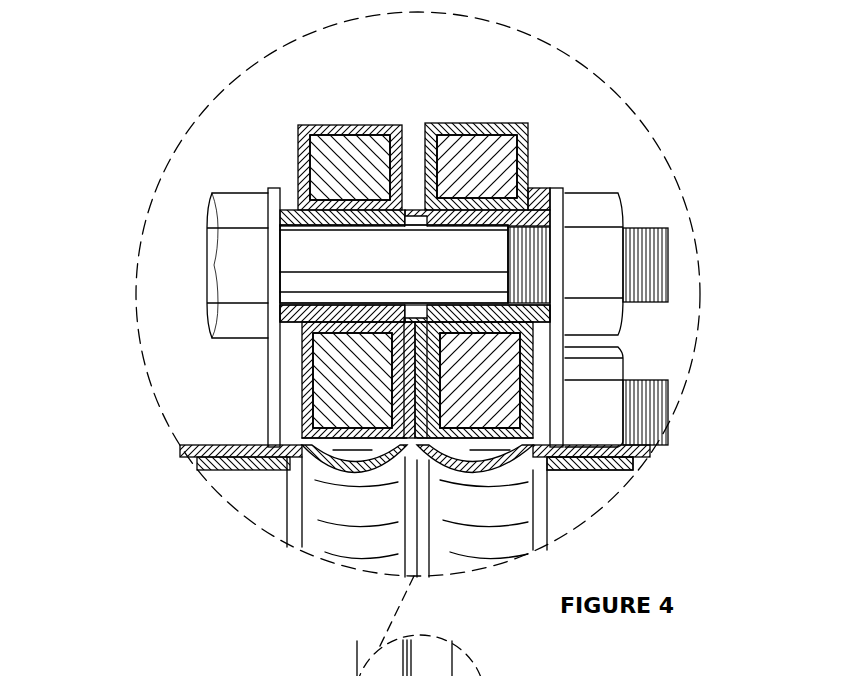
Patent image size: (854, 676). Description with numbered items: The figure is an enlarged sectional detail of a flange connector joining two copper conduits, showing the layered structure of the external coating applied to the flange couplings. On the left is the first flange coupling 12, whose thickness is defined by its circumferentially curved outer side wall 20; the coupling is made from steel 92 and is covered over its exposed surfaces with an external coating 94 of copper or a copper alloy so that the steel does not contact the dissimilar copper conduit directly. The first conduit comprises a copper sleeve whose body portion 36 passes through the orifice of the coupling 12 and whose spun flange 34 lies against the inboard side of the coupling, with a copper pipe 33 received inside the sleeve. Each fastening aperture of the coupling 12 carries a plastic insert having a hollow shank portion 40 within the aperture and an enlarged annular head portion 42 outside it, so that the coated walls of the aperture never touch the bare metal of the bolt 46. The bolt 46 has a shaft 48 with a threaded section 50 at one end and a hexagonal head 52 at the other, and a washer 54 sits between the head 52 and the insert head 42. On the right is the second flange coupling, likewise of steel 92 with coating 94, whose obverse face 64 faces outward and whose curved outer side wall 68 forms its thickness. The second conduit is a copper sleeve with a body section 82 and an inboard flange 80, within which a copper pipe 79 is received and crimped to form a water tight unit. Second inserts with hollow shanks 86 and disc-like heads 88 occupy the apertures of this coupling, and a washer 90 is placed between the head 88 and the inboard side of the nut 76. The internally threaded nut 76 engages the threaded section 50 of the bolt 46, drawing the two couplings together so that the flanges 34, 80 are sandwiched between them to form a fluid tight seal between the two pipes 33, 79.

The first flange coupling 12 is at (298, 150).
The outer side wall 20 is at (347, 127).
The pipe 33 is at (245, 470).
The flange 34 is at (410, 405).
The body portion 36 is at (183, 447).
The shank portion 40 is at (342, 307).
The head portion 42 is at (300, 327).
The bolt 46 is at (190, 208).
The shaft 48 is at (320, 249).
The threaded section 50 is at (635, 298).
The head 52 is at (232, 265).
The washer 54 is at (268, 190).
The obverse face 64 is at (540, 345).
The outer side wall 68 is at (485, 124).
The nut 76 is at (607, 315).
The pipe 79 is at (590, 470).
The flange 80 is at (530, 378).
The body section 82 is at (635, 457).
The hollow shank 86 is at (525, 323).
The head 88 is at (540, 187).
The washer 90 is at (557, 190).
The steel 92 is at (372, 150).
The external coating 94 is at (508, 124).